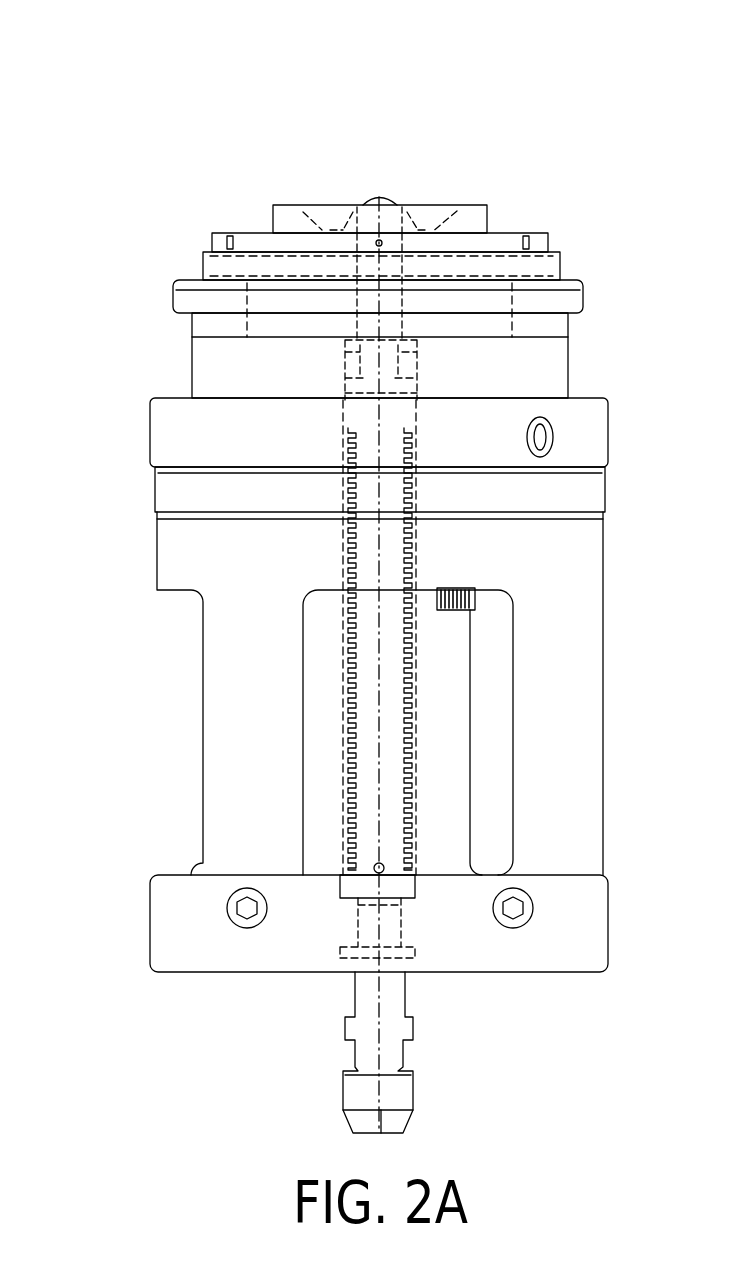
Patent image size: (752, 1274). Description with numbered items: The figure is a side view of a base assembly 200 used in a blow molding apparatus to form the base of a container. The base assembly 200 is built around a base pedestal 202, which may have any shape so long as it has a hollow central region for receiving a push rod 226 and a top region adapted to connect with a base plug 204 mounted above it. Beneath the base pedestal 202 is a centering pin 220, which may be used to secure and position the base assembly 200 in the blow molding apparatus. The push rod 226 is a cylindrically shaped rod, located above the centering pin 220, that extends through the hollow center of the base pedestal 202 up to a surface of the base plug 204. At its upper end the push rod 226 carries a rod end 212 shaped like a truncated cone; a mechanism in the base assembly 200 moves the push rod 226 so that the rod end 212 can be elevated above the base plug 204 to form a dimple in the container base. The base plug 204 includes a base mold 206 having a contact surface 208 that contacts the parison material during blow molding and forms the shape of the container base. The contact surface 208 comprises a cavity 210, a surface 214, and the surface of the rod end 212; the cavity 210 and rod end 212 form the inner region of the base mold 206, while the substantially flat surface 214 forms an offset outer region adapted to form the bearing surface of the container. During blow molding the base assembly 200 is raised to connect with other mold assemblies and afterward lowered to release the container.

The base assembly 200 is at (97, 74).
The base pedestal 202 is at (157, 550).
The base plug 204 is at (200, 268).
The base mold 206 is at (273, 223).
The contact surface 208 is at (284, 175).
The cavity 210 is at (337, 220).
The rod end 212 is at (388, 200).
The surface 214 is at (478, 204).
The centering pin 220 is at (343, 1093).
The push rod 226 is at (357, 390).